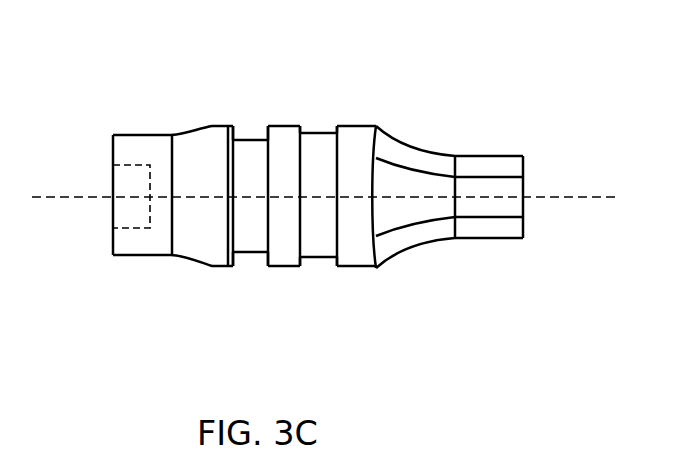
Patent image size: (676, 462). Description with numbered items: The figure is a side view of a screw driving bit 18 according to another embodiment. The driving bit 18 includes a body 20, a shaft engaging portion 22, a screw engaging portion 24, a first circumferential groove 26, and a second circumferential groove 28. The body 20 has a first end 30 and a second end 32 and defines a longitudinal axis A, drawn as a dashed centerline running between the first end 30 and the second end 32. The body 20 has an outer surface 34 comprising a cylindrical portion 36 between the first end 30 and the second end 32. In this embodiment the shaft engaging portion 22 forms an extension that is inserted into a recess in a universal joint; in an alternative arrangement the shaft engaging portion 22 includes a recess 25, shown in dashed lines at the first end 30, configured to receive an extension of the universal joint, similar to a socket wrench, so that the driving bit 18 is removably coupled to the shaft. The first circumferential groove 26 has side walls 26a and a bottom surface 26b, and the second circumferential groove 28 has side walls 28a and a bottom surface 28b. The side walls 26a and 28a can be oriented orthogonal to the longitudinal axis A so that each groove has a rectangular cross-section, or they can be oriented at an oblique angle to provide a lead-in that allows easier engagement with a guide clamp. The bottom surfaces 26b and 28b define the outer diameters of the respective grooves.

The screw driving bit 18 is at (107, 72).
The body 20 is at (350, 100).
The shaft engaging portion 22 is at (108, 228).
The screw engaging portion 24 is at (480, 163).
The recess 25 is at (128, 230).
The first circumferential groove 26 is at (322, 125).
The side walls 26a is at (332, 264).
The bottom surface 26b is at (312, 260).
The second circumferential groove 28 is at (242, 120).
The side walls 28a is at (232, 259).
The bottom surface 28b is at (250, 256).
The first end 30 is at (88, 155).
The second end 32 is at (532, 165).
The outer surface 34 is at (358, 127).
The cylindrical portion 36 is at (222, 128).
The longitudinal axis A is at (605, 197).